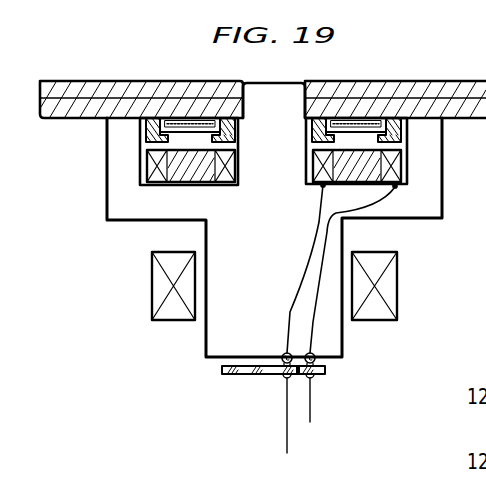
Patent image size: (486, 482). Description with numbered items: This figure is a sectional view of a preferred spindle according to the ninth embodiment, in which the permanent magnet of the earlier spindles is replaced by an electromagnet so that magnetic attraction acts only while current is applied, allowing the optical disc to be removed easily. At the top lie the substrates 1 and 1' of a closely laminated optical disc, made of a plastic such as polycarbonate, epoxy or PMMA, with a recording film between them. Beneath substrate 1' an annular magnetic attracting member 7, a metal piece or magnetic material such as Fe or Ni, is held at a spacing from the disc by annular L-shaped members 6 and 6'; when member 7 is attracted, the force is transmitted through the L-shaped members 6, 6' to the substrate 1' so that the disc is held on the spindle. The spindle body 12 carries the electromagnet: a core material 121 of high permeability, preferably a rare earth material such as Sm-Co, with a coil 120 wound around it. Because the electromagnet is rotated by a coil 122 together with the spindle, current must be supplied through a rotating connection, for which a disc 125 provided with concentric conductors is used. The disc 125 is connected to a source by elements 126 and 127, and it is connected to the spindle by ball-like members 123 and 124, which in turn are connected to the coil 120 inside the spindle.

The substrate 1 is at (263, 83).
The substrate 1' is at (263, 125).
The annular L-shaped member 6 is at (240, 96).
The annular L-shaped member 6' is at (306, 96).
The annular magnetic attracting member 7 is at (190, 120).
The body 12 is at (434, 163).
The coil 120 is at (401, 176).
The core material 121 is at (377, 183).
The coil 122 is at (391, 302).
The ball-like member 123 is at (316, 362).
The ball-like member 124 is at (298, 377).
The disc 125 is at (225, 378).
The element 126 is at (310, 422).
The element 127 is at (287, 453).